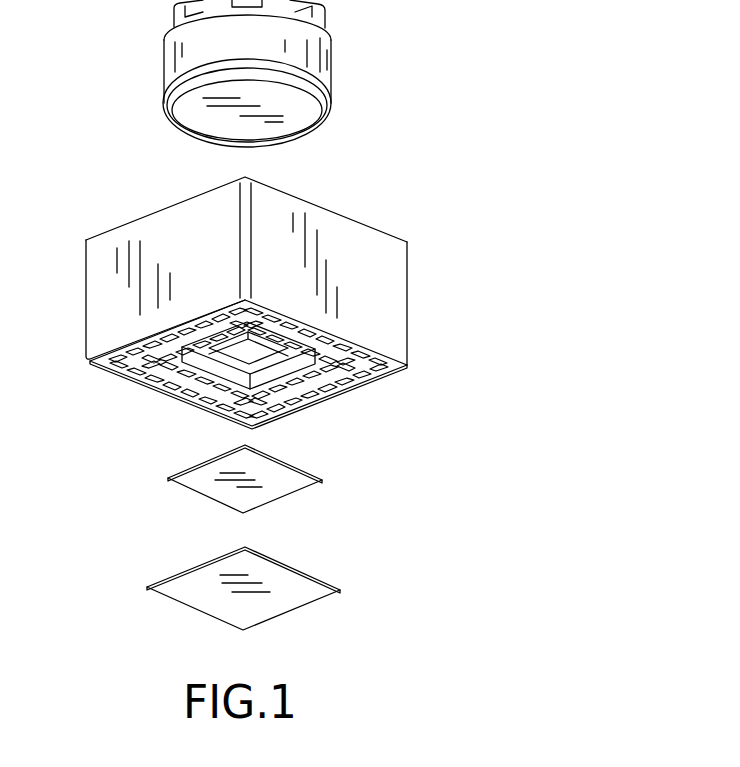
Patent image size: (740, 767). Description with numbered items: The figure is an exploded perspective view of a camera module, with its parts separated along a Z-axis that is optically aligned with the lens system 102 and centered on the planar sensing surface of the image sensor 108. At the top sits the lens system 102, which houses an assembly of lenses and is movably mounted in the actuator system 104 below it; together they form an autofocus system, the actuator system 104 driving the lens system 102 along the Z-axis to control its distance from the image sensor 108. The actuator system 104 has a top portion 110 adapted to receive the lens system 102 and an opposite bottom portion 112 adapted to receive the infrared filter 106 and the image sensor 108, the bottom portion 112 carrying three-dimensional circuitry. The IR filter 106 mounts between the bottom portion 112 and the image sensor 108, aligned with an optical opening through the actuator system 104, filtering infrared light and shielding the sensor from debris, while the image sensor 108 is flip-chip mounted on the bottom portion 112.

The lens system 102 is at (327, 62).
The actuator system 104 is at (390, 315).
The infrared (IR) filter 106 is at (283, 473).
The image sensor 108 is at (302, 587).
The top portion 110 is at (135, 220).
The bottom portion 112 is at (105, 363).